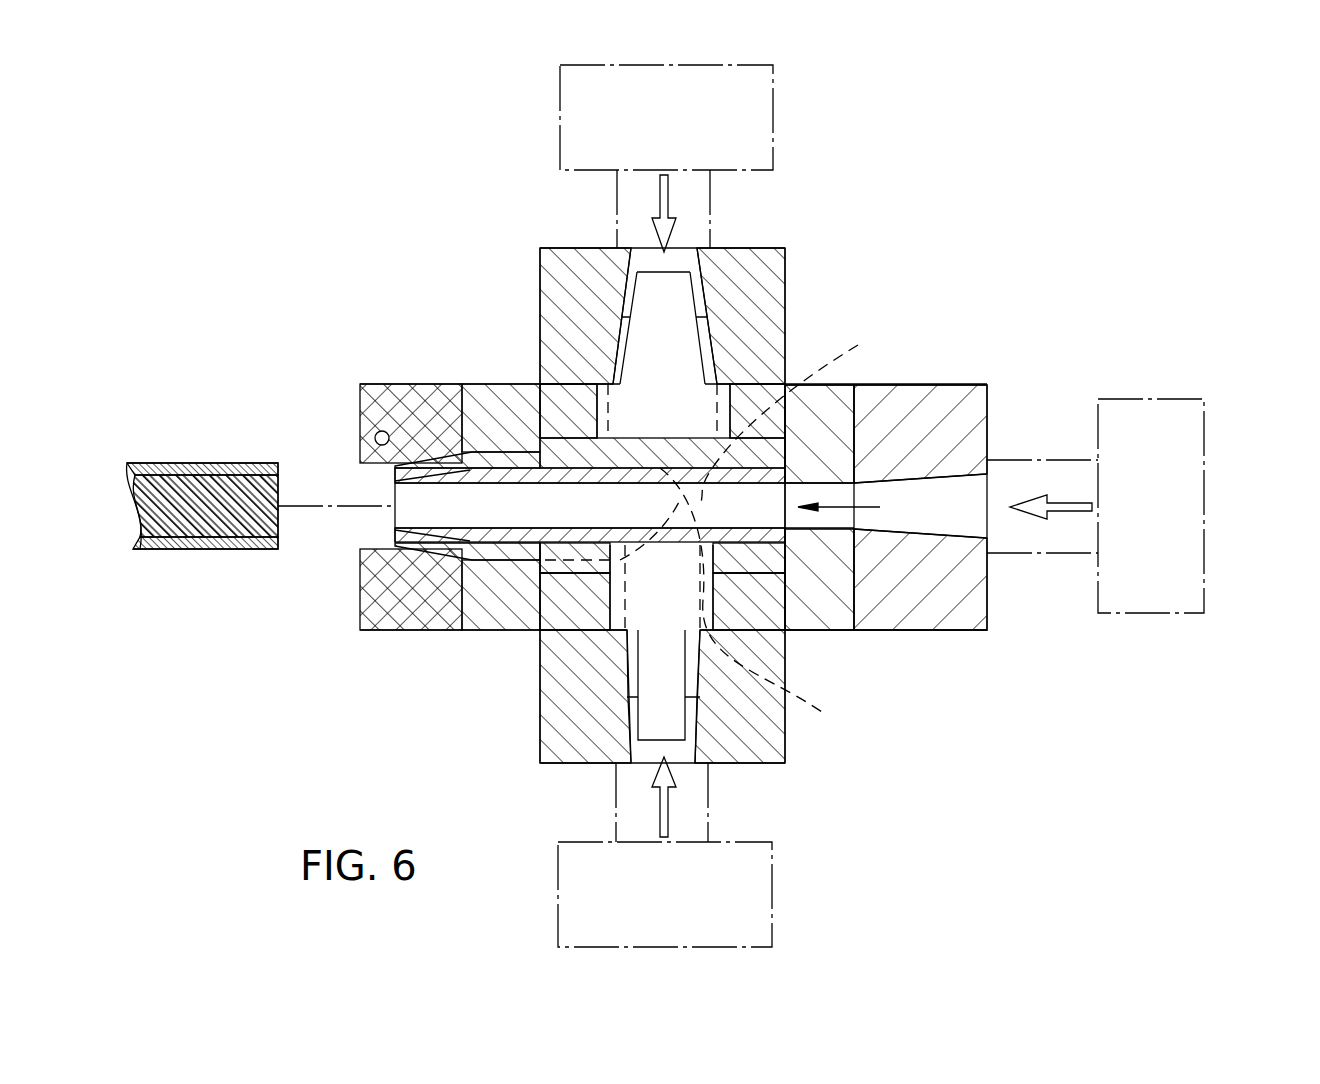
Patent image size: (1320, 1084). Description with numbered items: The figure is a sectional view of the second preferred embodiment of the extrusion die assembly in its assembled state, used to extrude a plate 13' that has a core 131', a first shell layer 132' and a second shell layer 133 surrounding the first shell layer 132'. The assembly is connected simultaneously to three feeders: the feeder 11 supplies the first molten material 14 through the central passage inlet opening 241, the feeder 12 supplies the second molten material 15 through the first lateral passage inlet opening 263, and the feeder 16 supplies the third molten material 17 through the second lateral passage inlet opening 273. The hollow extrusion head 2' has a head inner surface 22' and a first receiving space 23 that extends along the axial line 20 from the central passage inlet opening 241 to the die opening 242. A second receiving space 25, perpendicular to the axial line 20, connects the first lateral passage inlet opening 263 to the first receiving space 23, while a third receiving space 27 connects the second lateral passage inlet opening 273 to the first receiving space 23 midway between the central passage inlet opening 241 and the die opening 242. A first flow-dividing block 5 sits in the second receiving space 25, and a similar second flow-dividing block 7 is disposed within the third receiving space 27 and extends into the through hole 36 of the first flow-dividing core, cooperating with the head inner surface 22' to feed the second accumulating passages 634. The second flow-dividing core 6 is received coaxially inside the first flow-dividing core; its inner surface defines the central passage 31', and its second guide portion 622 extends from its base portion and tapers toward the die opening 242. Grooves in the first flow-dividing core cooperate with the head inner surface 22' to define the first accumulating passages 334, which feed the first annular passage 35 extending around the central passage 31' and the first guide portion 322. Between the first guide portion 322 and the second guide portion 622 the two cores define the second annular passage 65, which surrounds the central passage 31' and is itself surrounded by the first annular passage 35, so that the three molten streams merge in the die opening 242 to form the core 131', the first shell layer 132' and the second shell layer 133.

The hollow extrusion head 2' is at (886, 452).
The first flow-dividing block 5 is at (643, 340).
The second flow-dividing core 6 is at (790, 543).
The second flow-dividing block 7 is at (633, 603).
The feeder 11 is at (1167, 461).
The feeder 12 is at (752, 116).
The plate 13' is at (202, 449).
The first molten material 14 is at (1057, 507).
The second molten material 15 is at (663, 207).
The feeder 16 is at (722, 890).
The third molten material 17 is at (662, 787).
The axial line 20 is at (316, 505).
The head inner surface 22' is at (853, 624).
The first receiving space 23 is at (953, 522).
The second receiving space 25 is at (700, 300).
The third receiving space 27 is at (632, 717).
The central passage 31' is at (624, 417).
The first annular passage 35 is at (412, 458).
The through hole 36 is at (613, 567).
The second annular passage 65 is at (403, 550).
The core 131' is at (205, 549).
The first shell layer 132' is at (179, 564).
The second shell layer 133 is at (255, 549).
The central passage inlet opening 241 is at (980, 527).
The die opening 242 is at (375, 562).
The first lateral passage inlet opening 263 is at (708, 264).
The second lateral passage inlet opening 273 is at (637, 760).
The first guide portion 322 is at (438, 478).
The first accumulating passage 334 is at (805, 409).
The second guide portion 622 is at (430, 472).
The second accumulating passage 634 is at (748, 601).